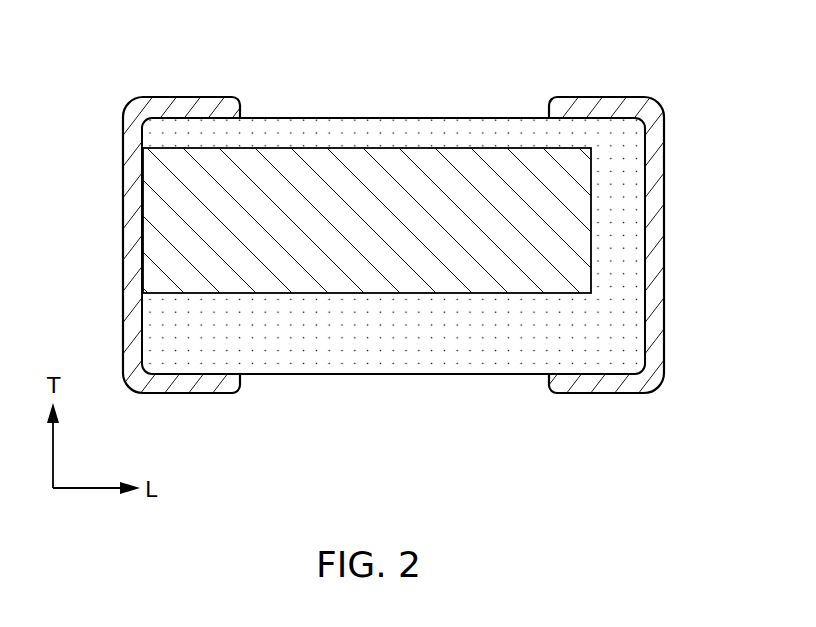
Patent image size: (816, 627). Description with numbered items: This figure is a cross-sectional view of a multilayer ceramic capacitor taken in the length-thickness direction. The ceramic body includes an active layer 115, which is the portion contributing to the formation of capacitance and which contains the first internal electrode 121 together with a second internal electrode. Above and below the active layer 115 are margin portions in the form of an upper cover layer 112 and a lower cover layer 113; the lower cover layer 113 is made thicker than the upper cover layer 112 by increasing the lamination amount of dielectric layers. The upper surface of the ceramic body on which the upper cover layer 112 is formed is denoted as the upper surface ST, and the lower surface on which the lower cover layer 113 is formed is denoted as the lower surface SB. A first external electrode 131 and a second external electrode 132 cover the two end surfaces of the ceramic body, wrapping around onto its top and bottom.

The upper cover layer 112 is at (446, 130).
The lower cover layer 113 is at (445, 355).
The active layer 115 is at (591, 170).
The first internal electrode 121 is at (158, 212).
The first external electrode 131 is at (190, 101).
The second external electrode 132 is at (605, 103).
The upper surface ST is at (363, 117).
The lower surface SB is at (349, 375).